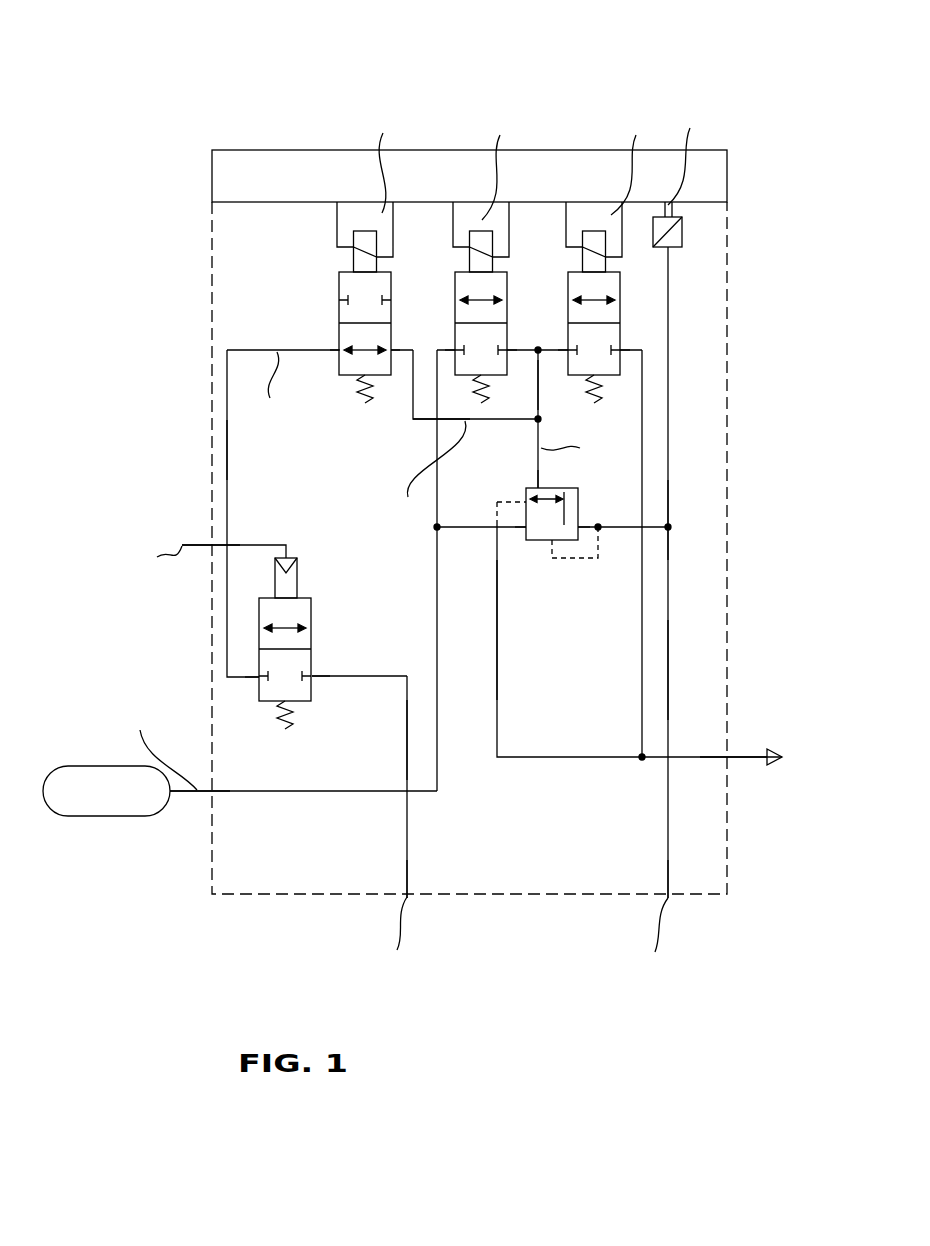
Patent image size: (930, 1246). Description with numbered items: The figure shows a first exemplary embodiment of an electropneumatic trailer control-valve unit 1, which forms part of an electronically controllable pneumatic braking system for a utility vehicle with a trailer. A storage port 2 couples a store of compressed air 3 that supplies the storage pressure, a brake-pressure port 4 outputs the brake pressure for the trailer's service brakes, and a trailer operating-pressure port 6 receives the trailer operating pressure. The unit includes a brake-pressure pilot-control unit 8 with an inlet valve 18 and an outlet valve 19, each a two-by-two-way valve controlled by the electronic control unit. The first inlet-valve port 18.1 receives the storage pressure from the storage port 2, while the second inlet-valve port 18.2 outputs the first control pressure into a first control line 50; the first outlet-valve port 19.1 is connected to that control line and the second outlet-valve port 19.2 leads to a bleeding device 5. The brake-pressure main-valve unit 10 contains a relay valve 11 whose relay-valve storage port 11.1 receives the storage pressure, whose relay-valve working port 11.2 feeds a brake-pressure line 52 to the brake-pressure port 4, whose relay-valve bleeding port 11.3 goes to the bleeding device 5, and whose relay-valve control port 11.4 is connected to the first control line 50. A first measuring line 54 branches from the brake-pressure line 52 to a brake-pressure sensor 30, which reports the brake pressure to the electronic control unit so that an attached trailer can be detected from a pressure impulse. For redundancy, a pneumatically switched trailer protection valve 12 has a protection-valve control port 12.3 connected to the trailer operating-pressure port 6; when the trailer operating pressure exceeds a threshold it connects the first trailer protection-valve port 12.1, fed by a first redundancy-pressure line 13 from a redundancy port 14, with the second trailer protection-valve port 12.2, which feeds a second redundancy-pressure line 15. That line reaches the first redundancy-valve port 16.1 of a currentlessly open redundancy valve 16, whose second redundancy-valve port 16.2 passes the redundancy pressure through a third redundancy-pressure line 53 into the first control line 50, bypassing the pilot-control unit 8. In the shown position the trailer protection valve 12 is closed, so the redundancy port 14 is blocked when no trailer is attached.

The electropneumatic trailer control-valve unit 1 is at (303, 75).
The storage port 2 is at (210, 792).
The store of compressed air 3 is at (88, 766).
The brake-pressure port 4 is at (668, 898).
The bleeding device 5 is at (773, 763).
The trailer operating-pressure port 6 is at (210, 546).
The brake-pressure pilot-control unit 8 is at (270, 230).
The brake-pressure main-valve unit 10 is at (625, 448).
The relay valve 11 is at (573, 486).
The relay-valve storage port 11.1 is at (527, 541).
The relay-valve working port 11.2 is at (580, 527).
The relay-valve bleeding port 11.3 is at (525, 498).
The relay-valve control port 11.4 is at (537, 487).
The trailer protection valve 12 is at (312, 612).
The first trailer protection-valve port 12.1 is at (312, 676).
The second trailer protection-valve port 12.2 is at (258, 680).
The protection-valve control port 12.3 is at (292, 558).
The first redundancy-pressure line 13 is at (407, 740).
The redundancy port 14 is at (408, 897).
The second redundancy-pressure line 15 is at (227, 448).
The redundancy valve 16 is at (340, 273).
The first redundancy-valve port 16.1 is at (340, 350).
The second redundancy-valve port 16.2 is at (422, 335).
The inlet valve 18 is at (455, 272).
The first inlet-valve port 18.1 is at (457, 350).
The second inlet-valve port 18.2 is at (540, 330).
The outlet valve 19 is at (620, 317).
The first outlet-valve port 19.1 is at (568, 350).
The second outlet-valve port 19.2 is at (620, 351).
The brake-pressure sensor 30 is at (682, 235).
The first control line 50 is at (541, 385).
The brake-pressure line 52 is at (668, 673).
The third redundancy-pressure line 53 is at (400, 420).
The first measuring line 54 is at (668, 496).